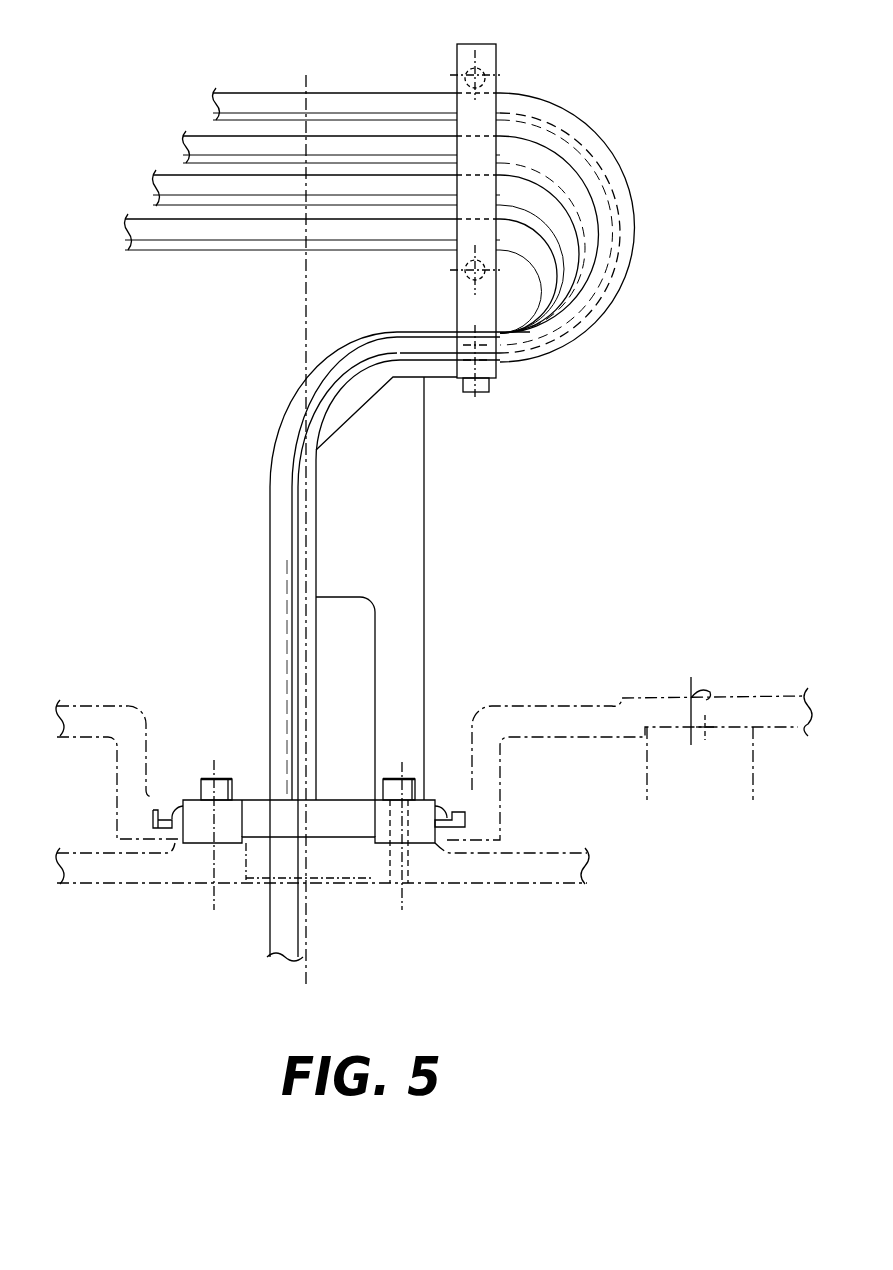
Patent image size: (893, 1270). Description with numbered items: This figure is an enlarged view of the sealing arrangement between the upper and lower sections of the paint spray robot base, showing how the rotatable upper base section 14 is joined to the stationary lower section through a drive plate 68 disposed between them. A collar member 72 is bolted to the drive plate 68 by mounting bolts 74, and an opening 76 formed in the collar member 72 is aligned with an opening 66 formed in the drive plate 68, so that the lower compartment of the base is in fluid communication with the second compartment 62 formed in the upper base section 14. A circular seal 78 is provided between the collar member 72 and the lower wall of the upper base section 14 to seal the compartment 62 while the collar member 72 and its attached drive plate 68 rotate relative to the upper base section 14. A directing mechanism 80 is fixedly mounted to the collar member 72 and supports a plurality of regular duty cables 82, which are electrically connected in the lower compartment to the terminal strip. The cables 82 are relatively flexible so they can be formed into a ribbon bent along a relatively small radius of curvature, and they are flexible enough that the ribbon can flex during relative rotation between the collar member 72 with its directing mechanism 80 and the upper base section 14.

The regular duty cables 82 is at (348, 232).
The directing mechanism 80 is at (424, 527).
The opening 76 is at (372, 808).
The mounting bolts 74 is at (237, 780).
The collar member 72 is at (178, 792).
The circular seal 78 is at (465, 815).
The opening 66 is at (372, 880).
The drive plate 68 is at (535, 890).
The second compartment 62 is at (707, 742).
The upper base section 14 is at (795, 730).